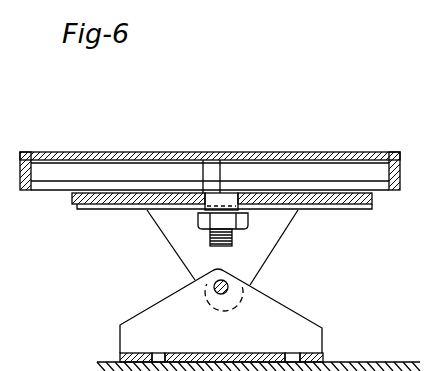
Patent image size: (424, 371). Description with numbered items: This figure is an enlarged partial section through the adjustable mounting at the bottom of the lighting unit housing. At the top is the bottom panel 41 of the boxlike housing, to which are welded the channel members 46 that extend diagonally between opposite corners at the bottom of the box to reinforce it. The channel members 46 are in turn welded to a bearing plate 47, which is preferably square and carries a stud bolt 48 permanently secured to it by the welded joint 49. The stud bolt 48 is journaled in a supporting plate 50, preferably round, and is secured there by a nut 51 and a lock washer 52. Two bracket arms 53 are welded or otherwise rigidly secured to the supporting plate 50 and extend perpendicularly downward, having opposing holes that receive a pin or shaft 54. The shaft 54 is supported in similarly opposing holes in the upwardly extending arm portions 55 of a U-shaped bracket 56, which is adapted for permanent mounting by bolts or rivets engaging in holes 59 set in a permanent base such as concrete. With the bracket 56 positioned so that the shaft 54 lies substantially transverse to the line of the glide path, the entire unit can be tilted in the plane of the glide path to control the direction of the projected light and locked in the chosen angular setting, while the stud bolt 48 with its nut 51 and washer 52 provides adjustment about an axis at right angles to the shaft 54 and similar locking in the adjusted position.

The bottom panel 41 is at (168, 152).
The channel members 46 is at (316, 173).
The bearing plate 47 is at (372, 206).
The stud bolt 48 is at (212, 240).
The welded joint 49 is at (203, 181).
The supporting plate 50 is at (77, 210).
The nut 51 is at (242, 222).
The lock washer 52 is at (196, 212).
The bracket arms 53 is at (262, 255).
The pin or shaft 54 is at (229, 290).
The arm portions 55 is at (288, 323).
The U-shaped bracket 56 is at (200, 352).
The holes 59 is at (160, 352).